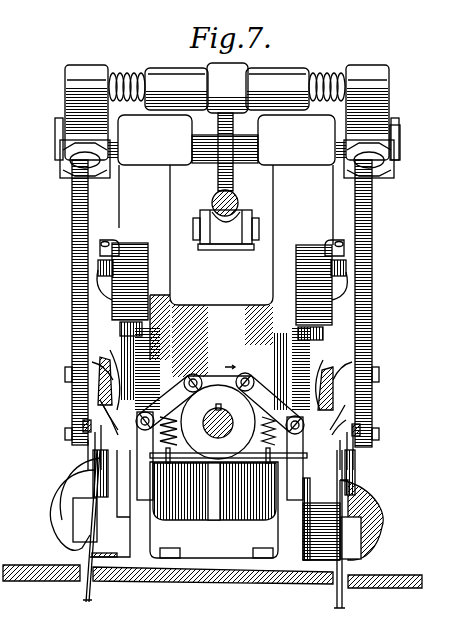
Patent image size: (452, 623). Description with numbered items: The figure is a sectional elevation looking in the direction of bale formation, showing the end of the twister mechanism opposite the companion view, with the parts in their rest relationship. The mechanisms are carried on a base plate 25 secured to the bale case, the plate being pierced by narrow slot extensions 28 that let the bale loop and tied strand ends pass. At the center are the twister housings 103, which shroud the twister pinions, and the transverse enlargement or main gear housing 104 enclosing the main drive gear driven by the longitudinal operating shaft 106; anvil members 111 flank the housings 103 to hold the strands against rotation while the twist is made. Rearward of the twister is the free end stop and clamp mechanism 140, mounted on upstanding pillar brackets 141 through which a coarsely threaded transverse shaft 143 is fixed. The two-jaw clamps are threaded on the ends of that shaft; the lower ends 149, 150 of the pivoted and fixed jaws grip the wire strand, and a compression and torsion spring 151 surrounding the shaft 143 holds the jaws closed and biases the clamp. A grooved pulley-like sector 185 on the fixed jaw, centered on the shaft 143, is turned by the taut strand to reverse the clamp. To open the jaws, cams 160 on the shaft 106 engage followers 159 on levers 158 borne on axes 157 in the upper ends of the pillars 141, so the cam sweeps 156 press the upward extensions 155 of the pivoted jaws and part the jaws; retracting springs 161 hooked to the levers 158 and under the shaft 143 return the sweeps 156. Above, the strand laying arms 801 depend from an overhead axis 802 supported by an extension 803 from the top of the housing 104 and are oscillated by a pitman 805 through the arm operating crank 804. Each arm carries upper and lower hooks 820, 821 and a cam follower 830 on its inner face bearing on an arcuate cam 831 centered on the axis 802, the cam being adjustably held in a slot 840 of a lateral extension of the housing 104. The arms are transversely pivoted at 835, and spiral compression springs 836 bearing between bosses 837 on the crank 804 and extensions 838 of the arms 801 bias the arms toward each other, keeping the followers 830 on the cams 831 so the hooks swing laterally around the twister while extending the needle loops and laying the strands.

The base plate 25 is at (15, 565).
The slot extensions 28 is at (82, 588).
The twister gear housing 103 is at (77, 507).
The main gear housing 104 is at (217, 317).
The operating shaft 106 is at (218, 422).
The anvil member 111 is at (78, 528).
The free end stop and clamp mechanism 140 is at (82, 443).
The pillar bracket 141 is at (287, 530).
The clamp shaft 143 is at (240, 477).
The lower end of pivoted jaw 149 is at (100, 400).
The lower end of fixed jaw 150 is at (103, 405).
The compression and torsion spring 151 is at (93, 463).
The upward jaw extension 155 is at (118, 520).
The cam sweep 156 is at (120, 370).
The sweep axis 157 is at (147, 411).
The lever 158 is at (157, 383).
The follower 159 is at (212, 367).
The cam 160 is at (240, 487).
The retracting spring 161 is at (147, 457).
The sector 185 is at (77, 505).
The loop extending and strand laying arm 801 is at (72, 223).
The overhead axis 802 is at (396, 147).
The housing extension 803 is at (160, 205).
The arm operating crank 804 is at (218, 182).
The pitman 805 is at (238, 205).
The upper hook 820 is at (92, 362).
The lower hook 821 is at (83, 425).
The cam follower 830 is at (92, 263).
The arcuate cam 831 is at (98, 293).
The transverse pivot 835 is at (62, 166).
The spiral compression spring 836 is at (122, 72).
The boss 837 is at (171, 72).
The arm extension 838 is at (65, 81).
The cam slot 840 is at (168, 297).